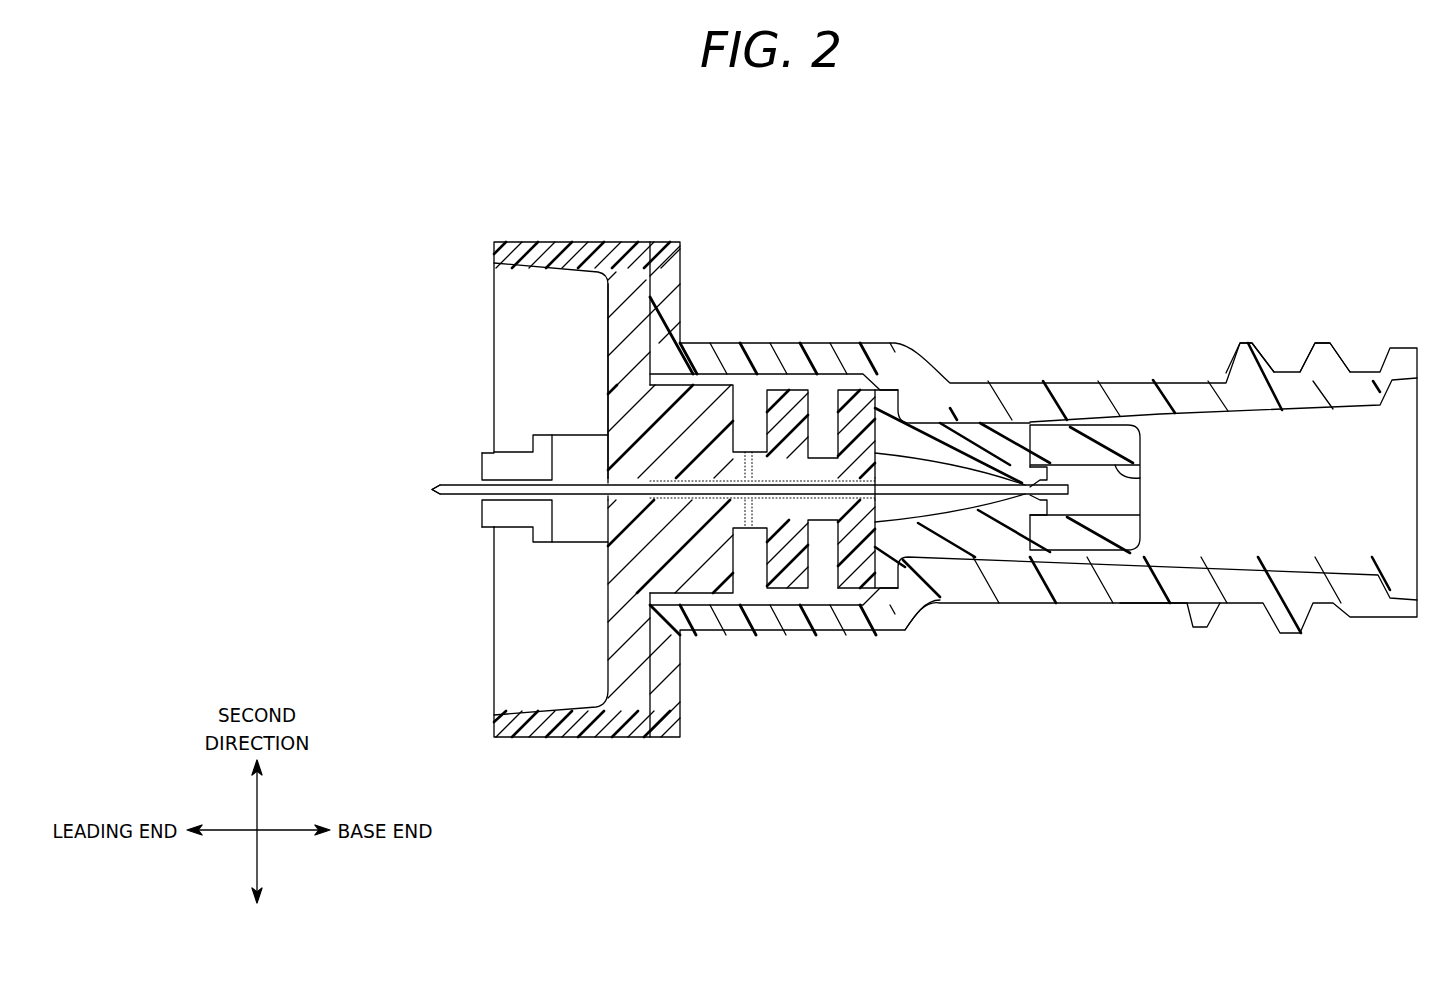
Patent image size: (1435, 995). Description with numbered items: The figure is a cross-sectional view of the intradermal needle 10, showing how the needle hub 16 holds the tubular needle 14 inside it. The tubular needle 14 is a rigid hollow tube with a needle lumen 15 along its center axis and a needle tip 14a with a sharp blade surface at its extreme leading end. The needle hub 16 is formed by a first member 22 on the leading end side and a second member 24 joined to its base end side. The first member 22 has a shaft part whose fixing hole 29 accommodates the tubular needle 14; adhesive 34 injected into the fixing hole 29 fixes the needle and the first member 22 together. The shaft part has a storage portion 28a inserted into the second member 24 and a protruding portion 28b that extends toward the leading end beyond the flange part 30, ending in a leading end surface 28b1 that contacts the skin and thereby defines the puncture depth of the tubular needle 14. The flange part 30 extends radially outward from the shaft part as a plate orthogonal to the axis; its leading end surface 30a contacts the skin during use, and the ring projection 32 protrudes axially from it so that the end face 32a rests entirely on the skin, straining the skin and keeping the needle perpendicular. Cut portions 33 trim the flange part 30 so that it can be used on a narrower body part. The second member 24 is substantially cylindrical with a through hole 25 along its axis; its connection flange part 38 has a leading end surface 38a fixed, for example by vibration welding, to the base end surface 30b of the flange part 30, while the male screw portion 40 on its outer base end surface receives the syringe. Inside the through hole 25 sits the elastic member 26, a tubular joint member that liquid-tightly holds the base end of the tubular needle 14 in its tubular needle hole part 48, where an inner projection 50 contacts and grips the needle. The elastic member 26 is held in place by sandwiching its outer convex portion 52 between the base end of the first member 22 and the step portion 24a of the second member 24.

The intradermal needle 10 is at (848, 186).
The tubular needle 14 is at (440, 487).
The needle tip 14a is at (440, 492).
The needle lumen 15 is at (465, 478).
The needle hub 16 is at (990, 290).
The first member 22 is at (856, 408).
The second member 24 is at (935, 400).
The step portion 24a is at (866, 590).
The through hole 25 is at (1145, 565).
The elastic member 26 is at (1078, 440).
The storage portion 28a is at (790, 590).
The protruding portion 28b is at (540, 545).
The leading end surface 28b1 is at (482, 505).
The fixing hole 29 is at (606, 487).
The flange part 30 is at (642, 270).
The leading end surface 30a is at (606, 313).
The base end surface 30b is at (655, 327).
The ring projection 32 is at (500, 740).
The end face 32a is at (494, 727).
The cut portions 33 is at (630, 242).
The adhesive 34 is at (748, 452).
The connection flange part 38 is at (657, 298).
The leading end surface 38a is at (650, 648).
The male screw portion 40 is at (1245, 362).
The tubular needle hole part 48 is at (1140, 490).
The inner projection 50 is at (1035, 500).
The outer convex portion 52 is at (905, 622).